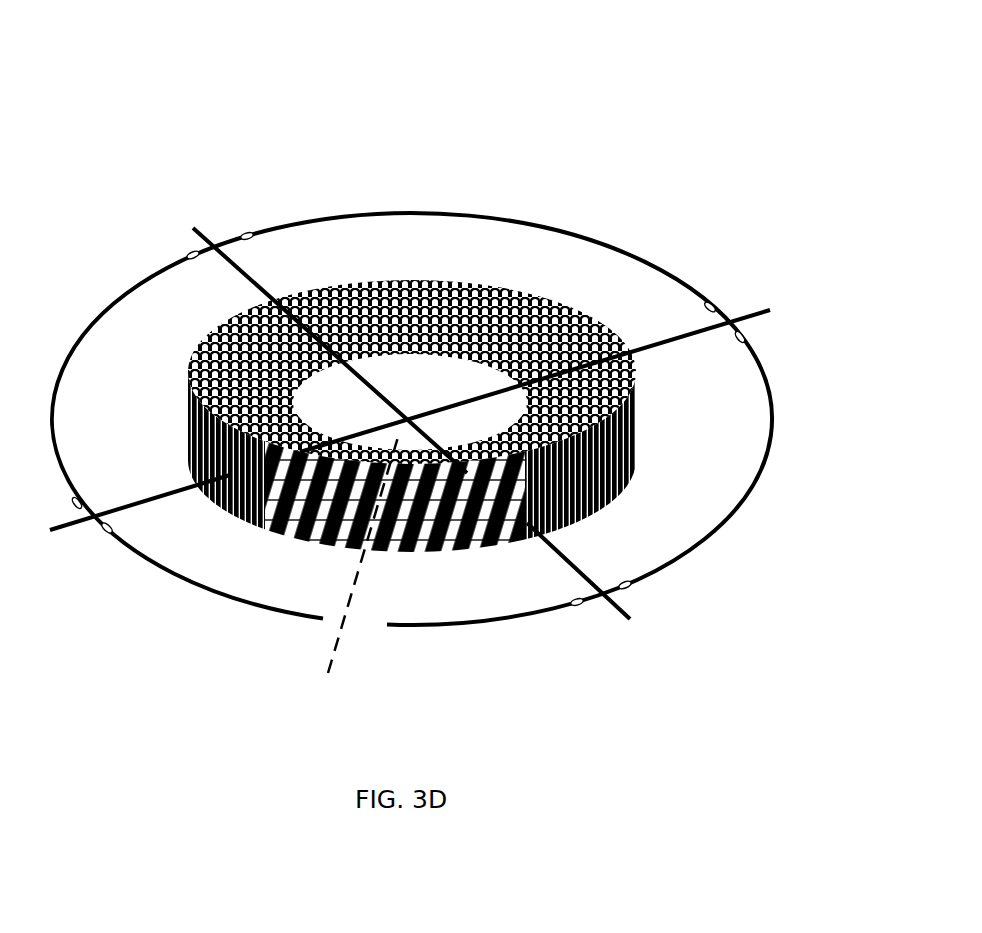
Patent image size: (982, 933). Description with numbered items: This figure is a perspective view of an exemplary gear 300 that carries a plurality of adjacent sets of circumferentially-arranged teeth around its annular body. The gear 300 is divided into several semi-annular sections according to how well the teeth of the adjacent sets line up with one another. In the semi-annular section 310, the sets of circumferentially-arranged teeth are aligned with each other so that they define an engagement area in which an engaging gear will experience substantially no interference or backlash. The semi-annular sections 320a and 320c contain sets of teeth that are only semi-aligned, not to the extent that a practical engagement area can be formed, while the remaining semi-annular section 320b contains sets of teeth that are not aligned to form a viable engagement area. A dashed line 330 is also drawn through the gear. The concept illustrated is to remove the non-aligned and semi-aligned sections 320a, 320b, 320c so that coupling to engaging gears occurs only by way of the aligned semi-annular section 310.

The gear 300 is at (618, 116).
The semi-annular section 310 is at (269, 522).
The semi-annular section 320a is at (642, 426).
The semi-annular section 320b is at (549, 295).
The semi-annular section 320c is at (219, 335).
The central axis 330 is at (338, 652).